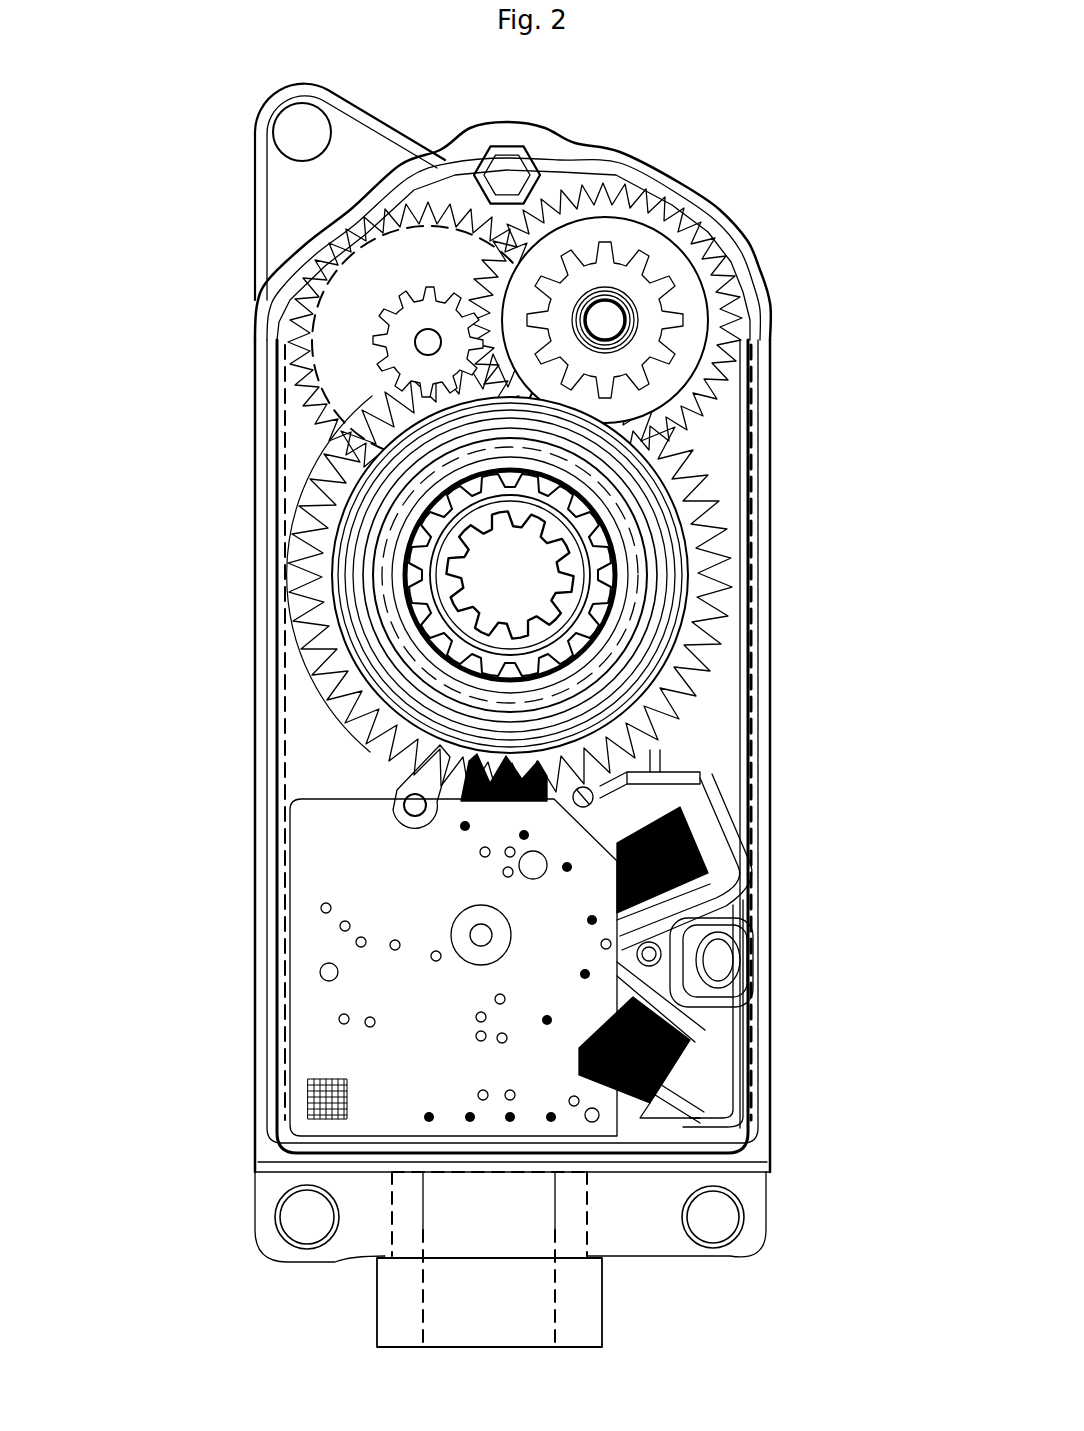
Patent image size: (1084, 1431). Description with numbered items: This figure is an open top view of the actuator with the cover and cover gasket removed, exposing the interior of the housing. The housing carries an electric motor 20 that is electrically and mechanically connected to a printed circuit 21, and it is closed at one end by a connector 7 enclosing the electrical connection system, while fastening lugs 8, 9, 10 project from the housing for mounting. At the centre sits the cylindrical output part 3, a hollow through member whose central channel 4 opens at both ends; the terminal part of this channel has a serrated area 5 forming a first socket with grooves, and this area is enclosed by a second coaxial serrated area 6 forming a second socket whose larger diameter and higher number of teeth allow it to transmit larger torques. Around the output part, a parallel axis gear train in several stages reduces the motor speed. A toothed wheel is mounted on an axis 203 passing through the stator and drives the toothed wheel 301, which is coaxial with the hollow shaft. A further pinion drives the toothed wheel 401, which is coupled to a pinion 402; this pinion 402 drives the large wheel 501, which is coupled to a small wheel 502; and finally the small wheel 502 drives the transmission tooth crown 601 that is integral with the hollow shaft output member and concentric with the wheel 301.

The fastening lug 8 is at (268, 103).
The large wheel 501 is at (668, 222).
The small wheel 502 is at (666, 332).
The cylindrical output part 3 is at (583, 447).
The toothed wheel 401 is at (300, 292).
The pinion 402 is at (383, 357).
The serrated area 5 is at (457, 548).
The second coaxial serrated area 6 is at (408, 601).
The central channel 4 is at (508, 548).
The toothed wheel 301 is at (302, 594).
The transmission tooth crown 601 is at (329, 641).
The axis 203 is at (411, 810).
The printed circuit 21 is at (413, 997).
The electric motor 20 is at (710, 876).
The fastening lug 10 is at (750, 1190).
The fastening lug 9 is at (273, 1240).
The connector 7 is at (583, 1282).